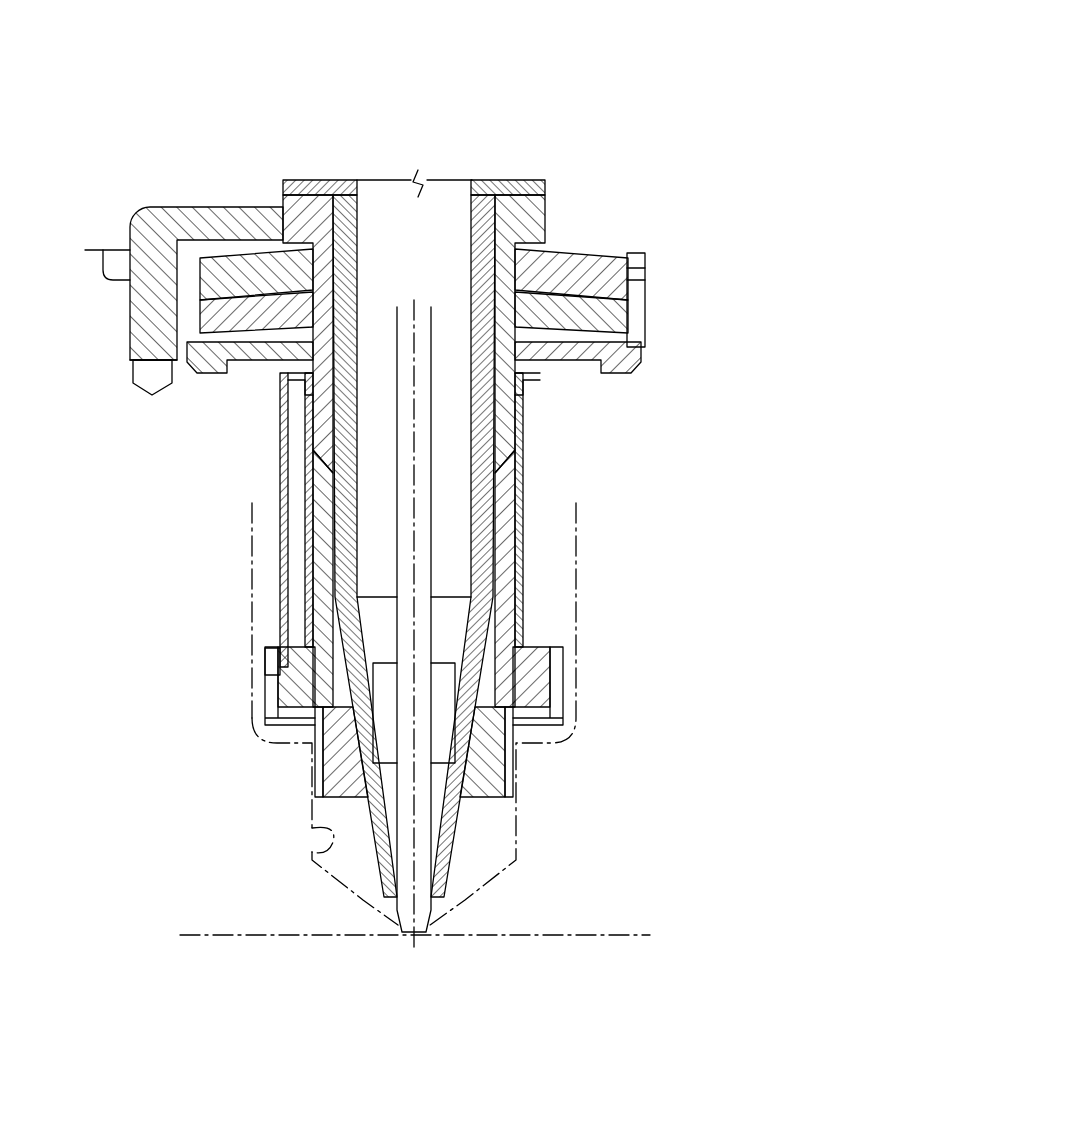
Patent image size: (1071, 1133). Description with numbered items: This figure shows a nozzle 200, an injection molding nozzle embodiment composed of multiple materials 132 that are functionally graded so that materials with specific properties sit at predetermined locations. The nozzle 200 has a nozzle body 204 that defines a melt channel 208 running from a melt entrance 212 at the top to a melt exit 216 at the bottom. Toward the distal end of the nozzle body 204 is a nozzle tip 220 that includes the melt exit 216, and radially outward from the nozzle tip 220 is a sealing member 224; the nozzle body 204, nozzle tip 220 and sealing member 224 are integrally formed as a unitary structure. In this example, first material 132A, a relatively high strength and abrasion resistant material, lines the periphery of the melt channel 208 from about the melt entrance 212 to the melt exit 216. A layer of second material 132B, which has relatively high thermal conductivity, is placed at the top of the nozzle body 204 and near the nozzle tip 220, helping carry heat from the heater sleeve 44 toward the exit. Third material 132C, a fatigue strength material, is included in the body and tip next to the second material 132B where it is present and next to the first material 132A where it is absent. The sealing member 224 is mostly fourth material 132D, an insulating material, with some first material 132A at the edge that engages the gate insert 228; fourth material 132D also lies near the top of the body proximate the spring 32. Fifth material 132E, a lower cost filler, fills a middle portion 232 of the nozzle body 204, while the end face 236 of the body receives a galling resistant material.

The nozzle 200 is at (676, 86).
The melt channel 208 is at (460, 162).
The melt entrance 212 is at (393, 197).
The melt exit 216 is at (441, 905).
The nozzle tip 220 is at (289, 764).
The sealing member 224 is at (510, 762).
The gate insert 228 is at (317, 853).
The middle portion 232 is at (271, 534).
The end face 236 is at (310, 183).
The spring 32 is at (617, 278).
The heater sleeve 44 is at (300, 430).
The materials 132 is at (298, 600).
The first material 132A is at (527, 233).
The second material 132B is at (487, 416).
The third material 132C is at (490, 600).
The fourth material 132D is at (535, 237).
The fifth material 132E is at (507, 517).
The nozzle body 204 is at (528, 467).